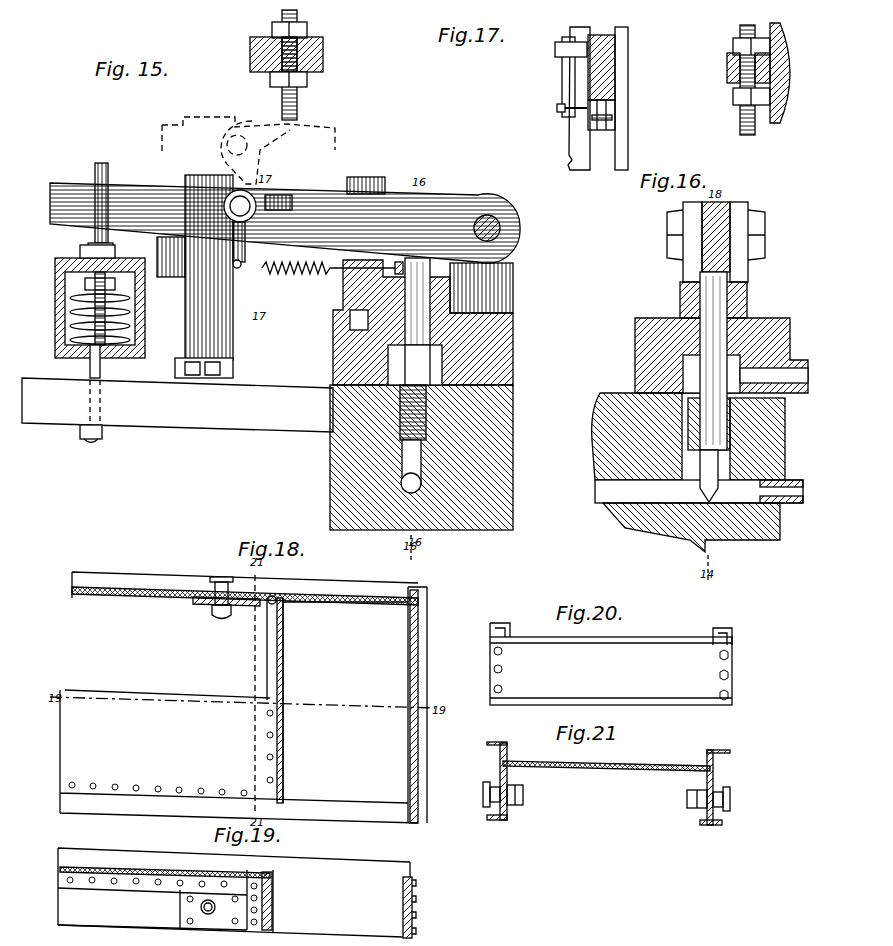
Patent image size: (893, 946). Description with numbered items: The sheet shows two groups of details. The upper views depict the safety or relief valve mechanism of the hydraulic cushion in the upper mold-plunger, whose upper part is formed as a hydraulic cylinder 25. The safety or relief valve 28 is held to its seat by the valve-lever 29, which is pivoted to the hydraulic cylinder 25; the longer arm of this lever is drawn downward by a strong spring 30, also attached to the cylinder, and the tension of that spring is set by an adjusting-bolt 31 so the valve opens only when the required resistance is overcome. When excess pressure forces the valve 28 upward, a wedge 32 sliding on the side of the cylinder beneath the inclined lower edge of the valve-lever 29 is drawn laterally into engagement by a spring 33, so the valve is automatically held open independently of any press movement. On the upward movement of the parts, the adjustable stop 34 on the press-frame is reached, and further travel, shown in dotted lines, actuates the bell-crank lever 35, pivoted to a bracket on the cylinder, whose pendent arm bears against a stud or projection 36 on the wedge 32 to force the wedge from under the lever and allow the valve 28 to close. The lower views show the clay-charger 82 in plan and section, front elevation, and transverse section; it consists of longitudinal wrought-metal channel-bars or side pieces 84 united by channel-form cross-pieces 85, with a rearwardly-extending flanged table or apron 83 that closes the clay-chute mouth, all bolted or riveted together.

In FIG. 15, the hydraulic cylinder 25 is at (330, 456).
In FIG. 16, the hydraulic cylinder 25 is at (605, 490).
In FIG. 15, the safety or relief valve 28 is at (415, 375).
In FIG. 16, the safety or relief valve 28 is at (713, 387).
In FIG. 15, the valve-lever 29 is at (282, 211).
In FIG. 17, the valve-lever 29 is at (610, 78).
In FIG. 16, the valve-lever 29 is at (716, 242).
In FIG. 15, the spring 30 is at (138, 318).
In FIG. 15, the adjusting-bolt 31 is at (102, 420).
In FIG. 15, the wedge 32 is at (207, 276).
In FIG. 15, the spring 33 is at (332, 283).
In FIG. 15, the adjustable stop 34 is at (289, 65).
In FIG. 17, the adjustable stop 34 is at (746, 79).
In FIG. 15, the bell-crank lever 35 is at (280, 198).
In FIG. 17, the bell-crank lever 35 is at (565, 88).
In FIG. 15, the stud or projection 36 is at (233, 265).
In FIG. 17, the stud or projection 36 is at (557, 110).
In FIG. 18, the clay-charger 82 is at (345, 651).
In FIG. 19, the clay-charger 82 is at (234, 899).
In FIG. 20, the clay-charger 82 is at (611, 628).
In FIG. 18, the table or apron 83 is at (242, 743).
In FIG. 19, the table or apron 83 is at (234, 886).
In FIG. 21, the table or apron 83 is at (606, 777).
In FIG. 18, the channel-bars or side pieces 84 is at (239, 689).
In FIG. 19, the channel-bars or side pieces 84 is at (152, 900).
In FIG. 20, the channel-bars or side pieces 84 is at (610, 620).
In FIG. 21, the channel-bars or side pieces 84 is at (604, 771).
In FIG. 18, the cross-pieces 85 is at (347, 705).
In FIG. 19, the cross-pieces 85 is at (346, 904).
In FIG. 20, the cross-pieces 85 is at (611, 671).